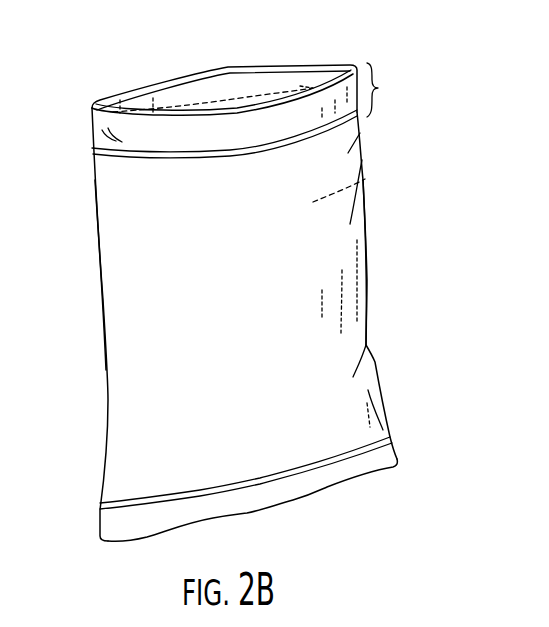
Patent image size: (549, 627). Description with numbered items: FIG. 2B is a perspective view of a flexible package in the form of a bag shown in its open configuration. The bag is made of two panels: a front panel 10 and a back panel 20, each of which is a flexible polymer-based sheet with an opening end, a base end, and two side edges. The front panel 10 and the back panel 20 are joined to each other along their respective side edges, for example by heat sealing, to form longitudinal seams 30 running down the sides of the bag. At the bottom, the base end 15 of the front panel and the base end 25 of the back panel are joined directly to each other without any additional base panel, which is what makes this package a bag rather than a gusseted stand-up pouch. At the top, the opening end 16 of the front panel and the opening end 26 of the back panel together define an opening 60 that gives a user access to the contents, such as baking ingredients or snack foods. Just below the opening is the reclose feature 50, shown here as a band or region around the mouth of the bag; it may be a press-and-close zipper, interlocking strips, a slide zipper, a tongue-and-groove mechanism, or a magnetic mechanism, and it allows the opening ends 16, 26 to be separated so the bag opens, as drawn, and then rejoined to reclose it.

The front panel 10 is at (157, 400).
The base end of the front panel 15 is at (303, 497).
The opening end of the front panel 16 is at (293, 97).
The back panel 20 is at (365, 179).
The base end of the back panel 25 is at (245, 473).
The opening end of the back panel 26 is at (170, 82).
The longitudinal seams 30 is at (367, 272).
The reclose feature 50 is at (385, 90).
The opening 60 is at (258, 88).